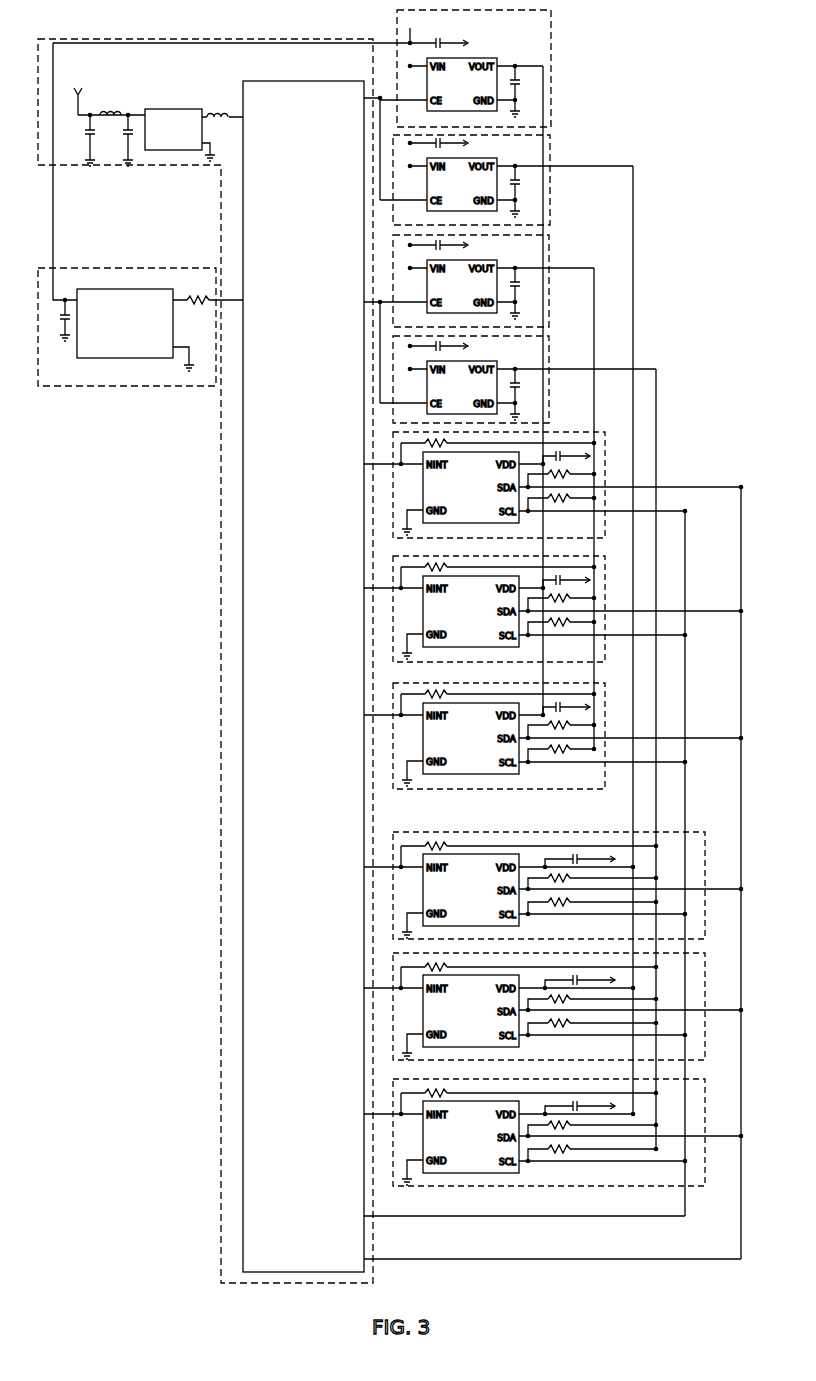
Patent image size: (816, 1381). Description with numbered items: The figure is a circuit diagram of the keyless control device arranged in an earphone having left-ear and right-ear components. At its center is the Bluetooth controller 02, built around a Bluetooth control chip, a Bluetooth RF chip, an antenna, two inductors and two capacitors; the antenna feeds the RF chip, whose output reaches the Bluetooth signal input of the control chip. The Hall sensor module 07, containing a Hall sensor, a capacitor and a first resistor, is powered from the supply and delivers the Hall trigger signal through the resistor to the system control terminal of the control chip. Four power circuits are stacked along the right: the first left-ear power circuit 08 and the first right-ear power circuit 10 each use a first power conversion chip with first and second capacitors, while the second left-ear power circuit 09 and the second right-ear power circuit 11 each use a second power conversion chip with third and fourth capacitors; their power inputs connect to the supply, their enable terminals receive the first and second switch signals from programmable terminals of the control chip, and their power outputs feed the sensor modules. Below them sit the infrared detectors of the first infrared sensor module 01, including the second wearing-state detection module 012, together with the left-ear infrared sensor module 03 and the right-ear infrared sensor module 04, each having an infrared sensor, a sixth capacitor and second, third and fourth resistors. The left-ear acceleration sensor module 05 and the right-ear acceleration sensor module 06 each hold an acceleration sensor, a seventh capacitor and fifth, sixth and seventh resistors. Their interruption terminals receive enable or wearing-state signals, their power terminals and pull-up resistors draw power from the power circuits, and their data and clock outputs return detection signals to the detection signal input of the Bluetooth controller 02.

The Bluetooth controller 02 is at (316, 40).
The Hall sensor module 07 is at (136, 270).
The first left-ear power circuit 08 is at (550, 52).
The first right-ear power circuit 10 is at (550, 156).
The second left-ear power circuit 09 is at (549, 265).
The second right-ear power circuit 11 is at (549, 366).
The first infrared sensor module 01 is at (607, 458).
The left-ear infrared sensor module 03 is at (605, 581).
The left-ear acceleration sensor module 05 is at (605, 708).
The second wearing-state detection module 012 is at (705, 872).
The right-ear infrared sensor module 04 is at (703, 993).
The right-ear acceleration sensor module 06 is at (703, 1097).